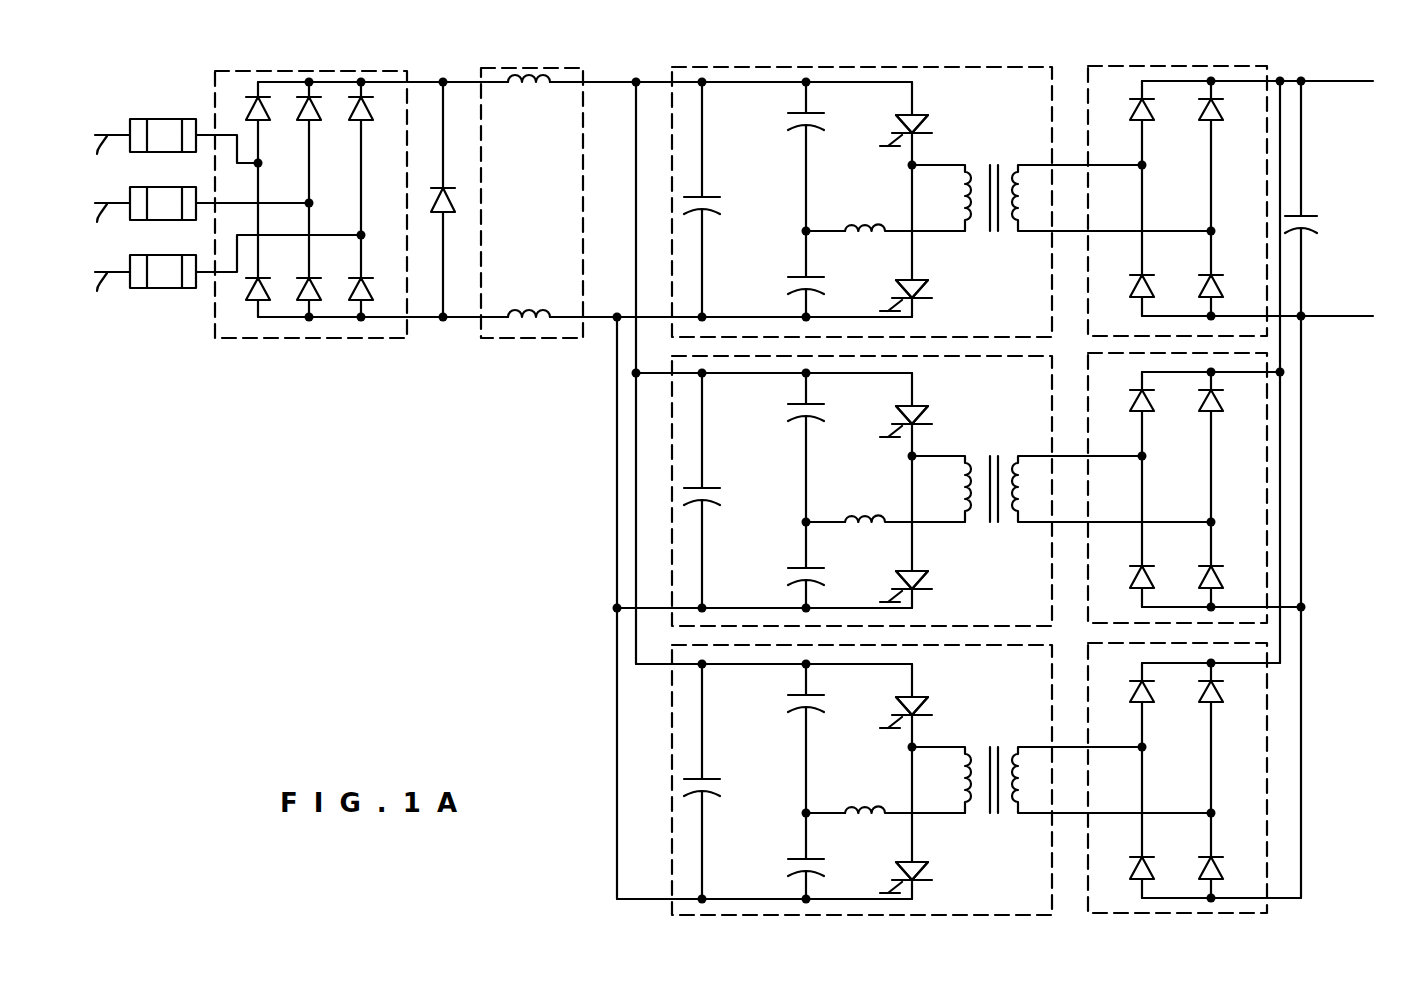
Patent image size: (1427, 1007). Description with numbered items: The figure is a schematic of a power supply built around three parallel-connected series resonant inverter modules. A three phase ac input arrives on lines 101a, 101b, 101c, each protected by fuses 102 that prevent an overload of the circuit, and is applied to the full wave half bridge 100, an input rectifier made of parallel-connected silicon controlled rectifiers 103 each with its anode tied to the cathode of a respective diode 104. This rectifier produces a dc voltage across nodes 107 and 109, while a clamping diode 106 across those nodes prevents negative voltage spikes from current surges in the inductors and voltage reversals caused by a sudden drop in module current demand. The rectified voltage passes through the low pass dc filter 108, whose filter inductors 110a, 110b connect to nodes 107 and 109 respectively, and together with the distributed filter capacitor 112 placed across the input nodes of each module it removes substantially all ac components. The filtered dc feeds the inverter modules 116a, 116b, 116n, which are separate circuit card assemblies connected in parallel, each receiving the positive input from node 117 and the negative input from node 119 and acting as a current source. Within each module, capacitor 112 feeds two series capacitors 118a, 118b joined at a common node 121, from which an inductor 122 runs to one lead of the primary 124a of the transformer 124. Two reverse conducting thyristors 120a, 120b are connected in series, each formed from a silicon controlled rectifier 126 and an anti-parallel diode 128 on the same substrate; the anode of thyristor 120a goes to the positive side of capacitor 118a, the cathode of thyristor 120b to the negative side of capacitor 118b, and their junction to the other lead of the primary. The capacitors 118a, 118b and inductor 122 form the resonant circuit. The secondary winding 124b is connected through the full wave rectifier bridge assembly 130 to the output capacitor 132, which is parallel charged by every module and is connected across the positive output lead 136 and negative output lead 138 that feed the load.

The full wave half bridge 100 is at (214, 305).
The line 101a is at (152, 153).
The line 101b is at (180, 220).
The line 101c is at (206, 279).
The fuses 102 is at (140, 100).
The silicon controlled rectifiers 103 is at (355, 110).
The diodes 104 is at (358, 304).
The clamping diode 106 is at (455, 192).
The node 107 is at (447, 85).
The low pass dc filter 108 is at (539, 338).
The node 109 is at (444, 320).
The filter inductor 110a is at (539, 84).
The filter inductor 110b is at (524, 314).
The capacitor 112 is at (702, 196).
The series resonant inverter module 116a is at (671, 211).
The series resonant inverter module 116b is at (670, 500).
The series resonant inverter module 116n is at (671, 772).
The positive voltage node 117 is at (634, 86).
The capacitor 118a is at (794, 114).
The capacitor 118b is at (792, 274).
The negative voltage node 119 is at (616, 325).
The reverse conducting thyristor 120a is at (877, 136).
The reverse conducting thyristor 120b is at (887, 281).
The common node 121 is at (806, 231).
The inductor 122 is at (849, 232).
The transformer 124 is at (996, 165).
The primary 124a is at (985, 257).
The secondary winding 124b is at (1016, 235).
The silicon controlled rectifier 126 is at (898, 117).
The anti-parallel diode 128 is at (930, 126).
The full wave rectifier bridge assembly 130 is at (1267, 166).
The output capacitor 132 is at (1306, 206).
The positive output lead 136 is at (1340, 83).
The negative output lead 138 is at (1336, 310).